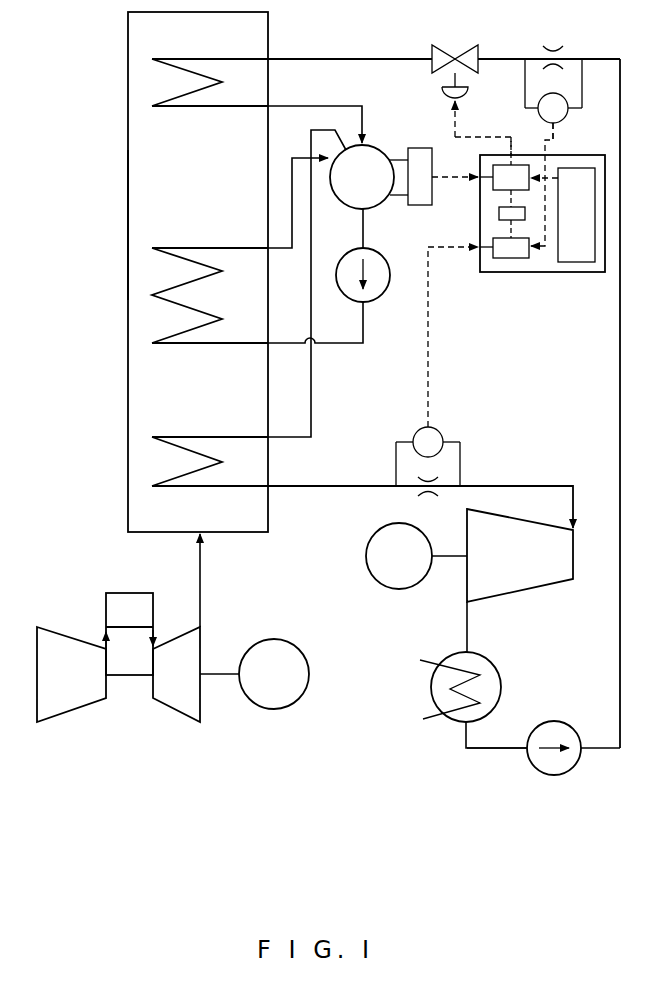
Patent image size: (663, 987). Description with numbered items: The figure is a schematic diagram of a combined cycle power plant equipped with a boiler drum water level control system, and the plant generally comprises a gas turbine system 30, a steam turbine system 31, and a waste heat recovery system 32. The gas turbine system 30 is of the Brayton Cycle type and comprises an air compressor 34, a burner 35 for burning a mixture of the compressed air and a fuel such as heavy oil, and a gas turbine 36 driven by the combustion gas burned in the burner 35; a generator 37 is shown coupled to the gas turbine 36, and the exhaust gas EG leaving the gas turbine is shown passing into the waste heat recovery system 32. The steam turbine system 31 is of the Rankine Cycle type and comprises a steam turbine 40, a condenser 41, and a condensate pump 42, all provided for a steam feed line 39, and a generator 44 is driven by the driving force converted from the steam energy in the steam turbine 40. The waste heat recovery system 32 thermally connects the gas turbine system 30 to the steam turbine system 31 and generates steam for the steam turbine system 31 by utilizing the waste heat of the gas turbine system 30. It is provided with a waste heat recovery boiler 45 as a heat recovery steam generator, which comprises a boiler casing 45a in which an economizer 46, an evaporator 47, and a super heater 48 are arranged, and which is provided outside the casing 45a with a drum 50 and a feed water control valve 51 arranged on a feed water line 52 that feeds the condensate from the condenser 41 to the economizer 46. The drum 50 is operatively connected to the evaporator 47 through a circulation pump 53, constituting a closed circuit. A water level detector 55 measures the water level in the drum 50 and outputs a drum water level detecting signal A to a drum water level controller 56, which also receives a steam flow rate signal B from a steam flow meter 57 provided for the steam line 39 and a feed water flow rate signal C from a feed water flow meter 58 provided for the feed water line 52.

The gas turbine system 30 is at (173, 665).
The steam turbine system 31 is at (486, 766).
The waste heat recovery system 32 is at (126, 308).
The air compressor 34 is at (70, 712).
The burner 35 is at (106, 604).
The gas turbine 36 is at (172, 712).
The generator 37 is at (272, 710).
The steam feed line 39 is at (345, 485).
The steam turbine 40 is at (532, 592).
The condenser 41 is at (500, 683).
The condensate pump 42 is at (533, 770).
The generator 44 is at (366, 556).
The waste heat recovery boiler 45 is at (127, 245).
The boiler casing 45a is at (128, 184).
The economizer 46 is at (191, 112).
The evaporator 47 is at (185, 247).
The super heater 48 is at (185, 436).
The drum 50 is at (381, 144).
The feed water control valve 51 is at (455, 44).
The feed water line 52 is at (334, 57).
The circulation pump 53 is at (378, 298).
The water level detector 55 is at (413, 206).
The drum water level controller 56 is at (533, 273).
The steam flow meter 57 is at (445, 431).
The feed water flow meter 58 is at (538, 120).
The drum water level detecting signal A is at (450, 184).
The steam flow rate signal B is at (432, 345).
The feed water flow rate signal C is at (556, 141).
The exhaust gas EG is at (200, 583).